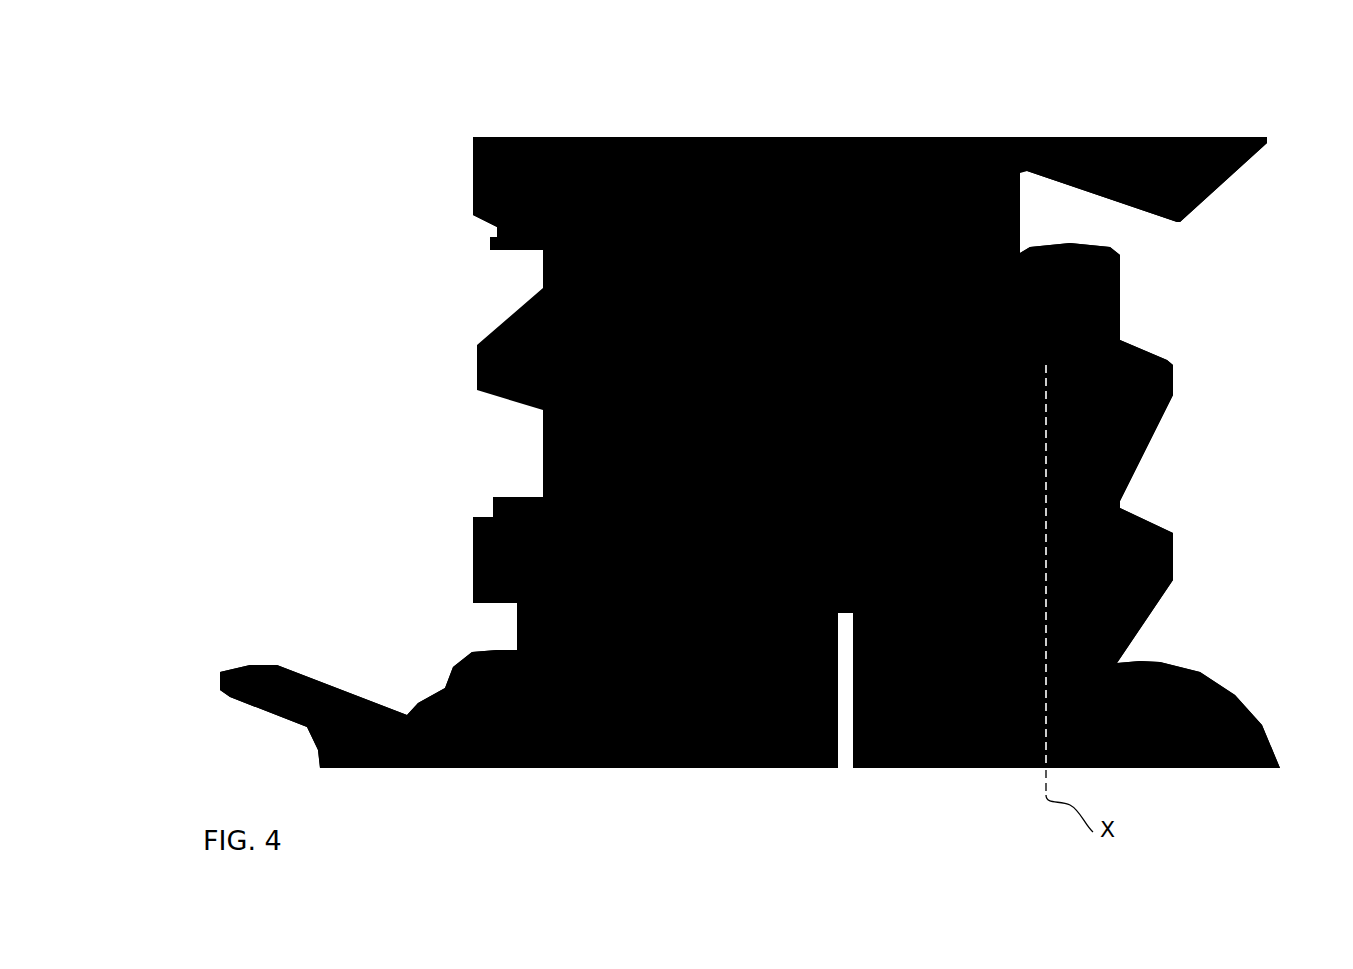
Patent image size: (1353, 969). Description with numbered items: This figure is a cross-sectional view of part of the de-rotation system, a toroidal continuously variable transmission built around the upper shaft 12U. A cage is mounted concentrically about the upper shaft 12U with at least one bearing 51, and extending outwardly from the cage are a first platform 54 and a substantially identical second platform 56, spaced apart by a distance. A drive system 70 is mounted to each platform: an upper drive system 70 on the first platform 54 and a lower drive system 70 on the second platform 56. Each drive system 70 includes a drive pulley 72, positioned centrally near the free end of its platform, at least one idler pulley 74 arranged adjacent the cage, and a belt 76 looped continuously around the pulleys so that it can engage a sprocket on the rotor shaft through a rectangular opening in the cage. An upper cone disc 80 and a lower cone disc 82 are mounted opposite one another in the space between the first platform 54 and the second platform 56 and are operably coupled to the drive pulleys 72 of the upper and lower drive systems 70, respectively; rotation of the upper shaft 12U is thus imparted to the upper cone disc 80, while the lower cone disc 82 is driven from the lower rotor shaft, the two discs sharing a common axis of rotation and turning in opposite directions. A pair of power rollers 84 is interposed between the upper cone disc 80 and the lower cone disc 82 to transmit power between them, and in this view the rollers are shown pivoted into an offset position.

The upper shaft 12U is at (543, 288).
The bearing 51 is at (512, 140).
The first platform 54 is at (1173, 393).
The second platform 56 is at (1170, 577).
The drive system 70 is at (1215, 267).
The drive pulley 72 is at (1087, 383).
The idler pulley 74 is at (1089, 268).
The belt 76 is at (998, 228).
The upper cone disc 80 is at (1117, 507).
The lower cone disc 82 is at (1090, 625).
The power roller 84 is at (1107, 550).